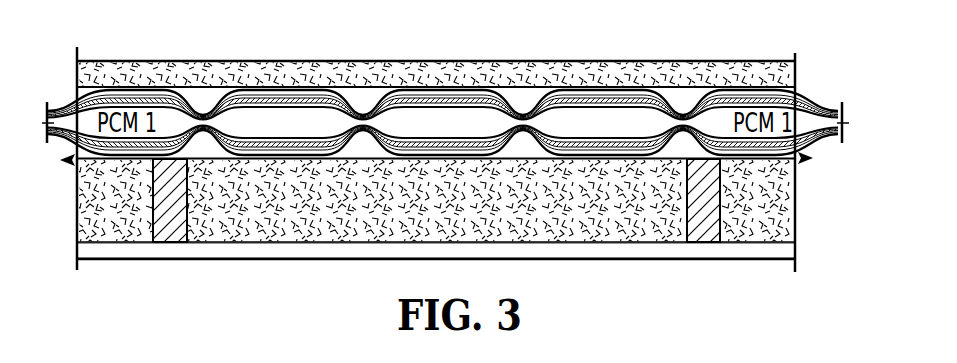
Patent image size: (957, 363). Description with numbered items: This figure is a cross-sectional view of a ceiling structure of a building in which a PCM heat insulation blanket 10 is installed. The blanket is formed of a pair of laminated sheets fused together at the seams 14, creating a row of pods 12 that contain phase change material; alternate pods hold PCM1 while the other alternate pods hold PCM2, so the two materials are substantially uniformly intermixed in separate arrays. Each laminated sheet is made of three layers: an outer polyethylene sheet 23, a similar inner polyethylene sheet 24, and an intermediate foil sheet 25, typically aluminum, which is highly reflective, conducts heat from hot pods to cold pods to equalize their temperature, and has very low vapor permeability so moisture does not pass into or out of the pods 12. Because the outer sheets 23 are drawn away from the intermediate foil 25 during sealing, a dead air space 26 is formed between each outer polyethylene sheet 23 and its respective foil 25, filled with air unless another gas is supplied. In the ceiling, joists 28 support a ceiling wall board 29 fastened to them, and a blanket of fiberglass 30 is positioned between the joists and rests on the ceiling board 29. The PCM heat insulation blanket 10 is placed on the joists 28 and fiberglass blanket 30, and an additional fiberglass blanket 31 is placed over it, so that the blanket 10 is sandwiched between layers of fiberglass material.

The PCM heat insulation blanket 10 is at (512, 98).
The pods 12 is at (280, 88).
The seams 14 is at (204, 114).
The outer polyethylene sheet 23 is at (803, 97).
The inner polyethylene sheet 24 is at (820, 110).
The intermediate foil sheet 25 is at (768, 98).
The dead air space 26 is at (767, 150).
The joists 28 is at (167, 228).
The ceiling wall board 29 is at (275, 252).
The blanket of fiberglass 30 is at (528, 236).
The additional fiberglass blanket 31 is at (350, 68).